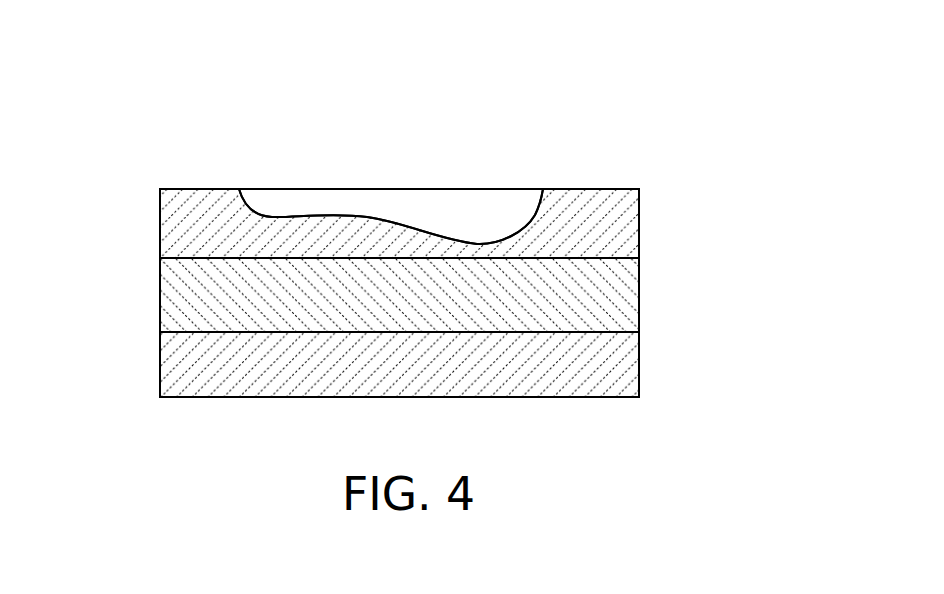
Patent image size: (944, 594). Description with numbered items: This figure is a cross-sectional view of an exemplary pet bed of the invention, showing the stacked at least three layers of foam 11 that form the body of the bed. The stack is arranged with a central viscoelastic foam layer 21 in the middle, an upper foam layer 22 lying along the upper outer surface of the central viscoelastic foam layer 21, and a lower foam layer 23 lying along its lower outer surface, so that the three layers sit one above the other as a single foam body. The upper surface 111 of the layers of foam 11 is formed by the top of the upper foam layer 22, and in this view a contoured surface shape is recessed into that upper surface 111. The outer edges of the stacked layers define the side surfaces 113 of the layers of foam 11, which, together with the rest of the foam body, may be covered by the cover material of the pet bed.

The layers of foam 11 is at (653, 270).
The upper surface 111 is at (592, 189).
The side surfaces 113 is at (648, 198).
The central viscoelastic foam layer 21 is at (183, 295).
The upper foam layer 22 is at (180, 222).
The lower foam layer 23 is at (175, 372).